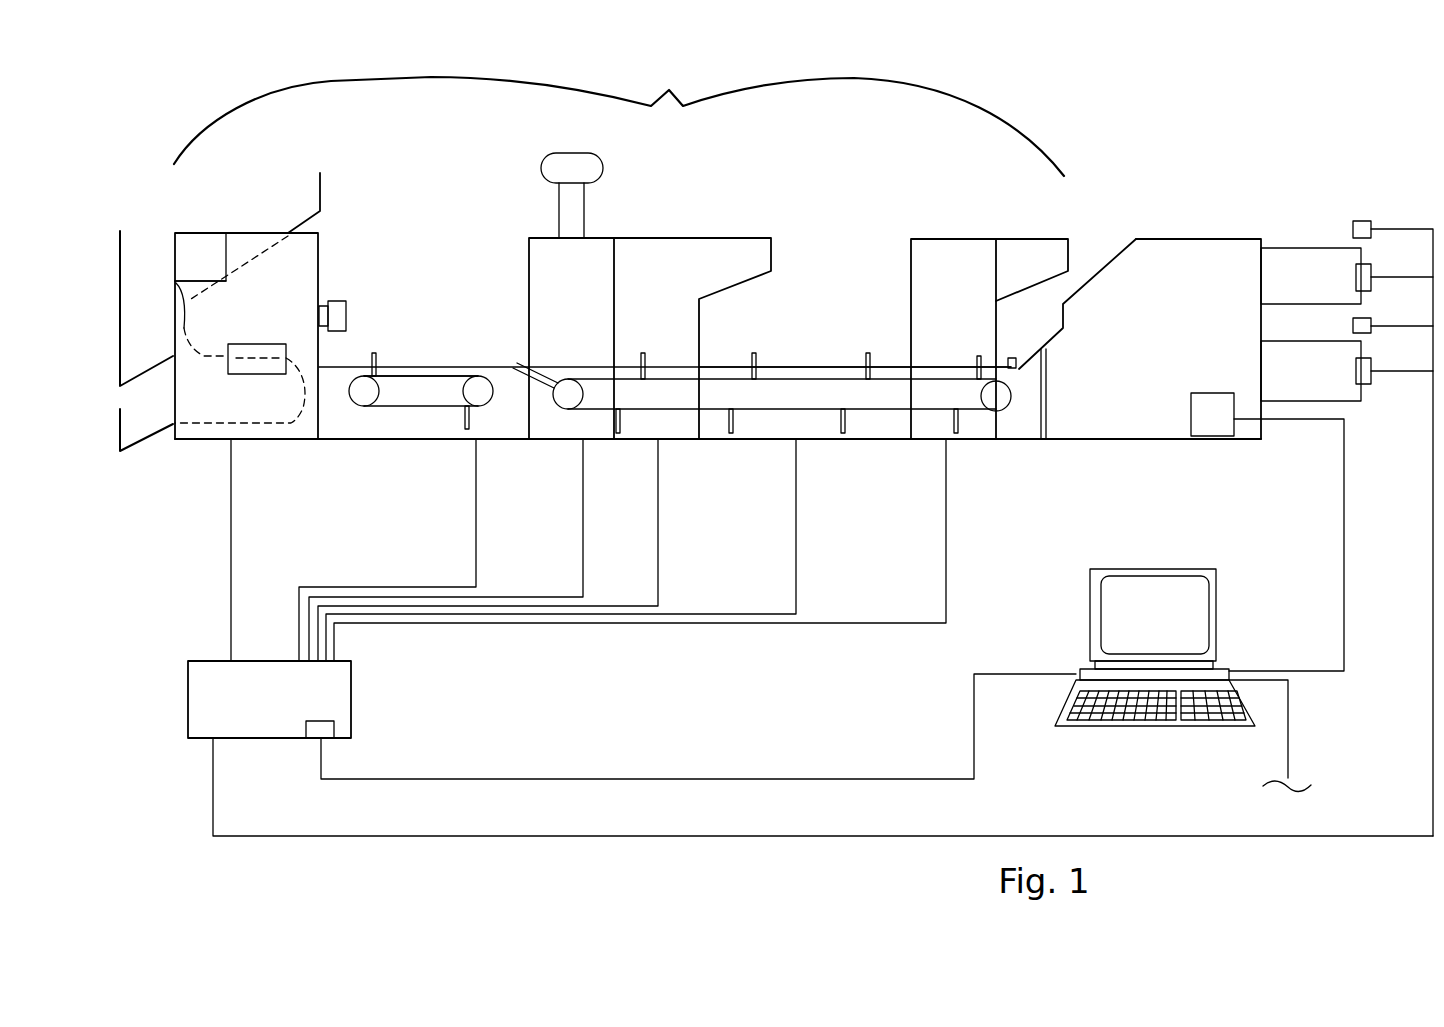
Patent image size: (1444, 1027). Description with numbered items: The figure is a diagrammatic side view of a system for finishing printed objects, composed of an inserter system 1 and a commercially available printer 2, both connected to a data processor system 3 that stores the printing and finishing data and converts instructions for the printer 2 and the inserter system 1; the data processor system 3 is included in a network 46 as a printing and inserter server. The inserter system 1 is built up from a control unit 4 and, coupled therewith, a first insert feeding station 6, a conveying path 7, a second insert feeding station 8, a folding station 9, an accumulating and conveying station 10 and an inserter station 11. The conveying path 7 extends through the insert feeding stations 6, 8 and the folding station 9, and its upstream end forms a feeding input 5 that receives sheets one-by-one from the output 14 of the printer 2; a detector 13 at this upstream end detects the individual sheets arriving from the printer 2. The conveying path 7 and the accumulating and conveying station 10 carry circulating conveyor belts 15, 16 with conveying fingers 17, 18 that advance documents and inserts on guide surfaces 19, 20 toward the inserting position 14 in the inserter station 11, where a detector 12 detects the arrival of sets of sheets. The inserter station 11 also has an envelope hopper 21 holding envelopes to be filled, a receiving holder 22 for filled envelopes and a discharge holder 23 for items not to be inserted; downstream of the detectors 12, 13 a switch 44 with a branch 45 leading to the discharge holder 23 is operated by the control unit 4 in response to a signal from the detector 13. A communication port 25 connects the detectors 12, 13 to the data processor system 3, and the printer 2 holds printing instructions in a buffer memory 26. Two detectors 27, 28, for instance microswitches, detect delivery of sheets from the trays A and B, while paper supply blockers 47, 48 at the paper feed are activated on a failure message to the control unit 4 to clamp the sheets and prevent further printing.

The inserter system 1 is at (619, 117).
The printer 2 is at (1202, 210).
The data processor system 3 is at (1075, 663).
The control unit 4 is at (350, 695).
The feeding input 5 is at (1013, 432).
The first insert feeding station 6 is at (928, 432).
The conveying path 7 is at (757, 432).
The second insert feeding station 8 is at (642, 435).
The folding station 9 is at (568, 428).
The accumulating and conveying station 10 is at (403, 422).
The inserter station 11 is at (215, 425).
The detector 12 is at (347, 303).
The detector 13 is at (1077, 268).
The inserting position / output 14 is at (228, 373).
The circulating conveyor belt 15 is at (788, 378).
The circulating conveyor belt 16 is at (415, 370).
The conveying finger 17 is at (866, 355).
The conveying finger 18 is at (373, 352).
The guide surface 19 is at (822, 366).
The guide surface 20 is at (462, 367).
The envelope hopper 21 is at (140, 450).
The receiving holder 22 is at (123, 300).
The discharge holder 23 is at (323, 187).
The communication port 25 is at (333, 728).
The buffer memory 26 is at (1212, 437).
The detector 27 is at (1362, 218).
The detector 28 is at (1372, 313).
The switch 44 is at (188, 282).
The branch 45 is at (213, 280).
The network 46 is at (1289, 747).
The paper supply blocker 47 is at (1367, 263).
The paper supply blocker 48 is at (1367, 383).